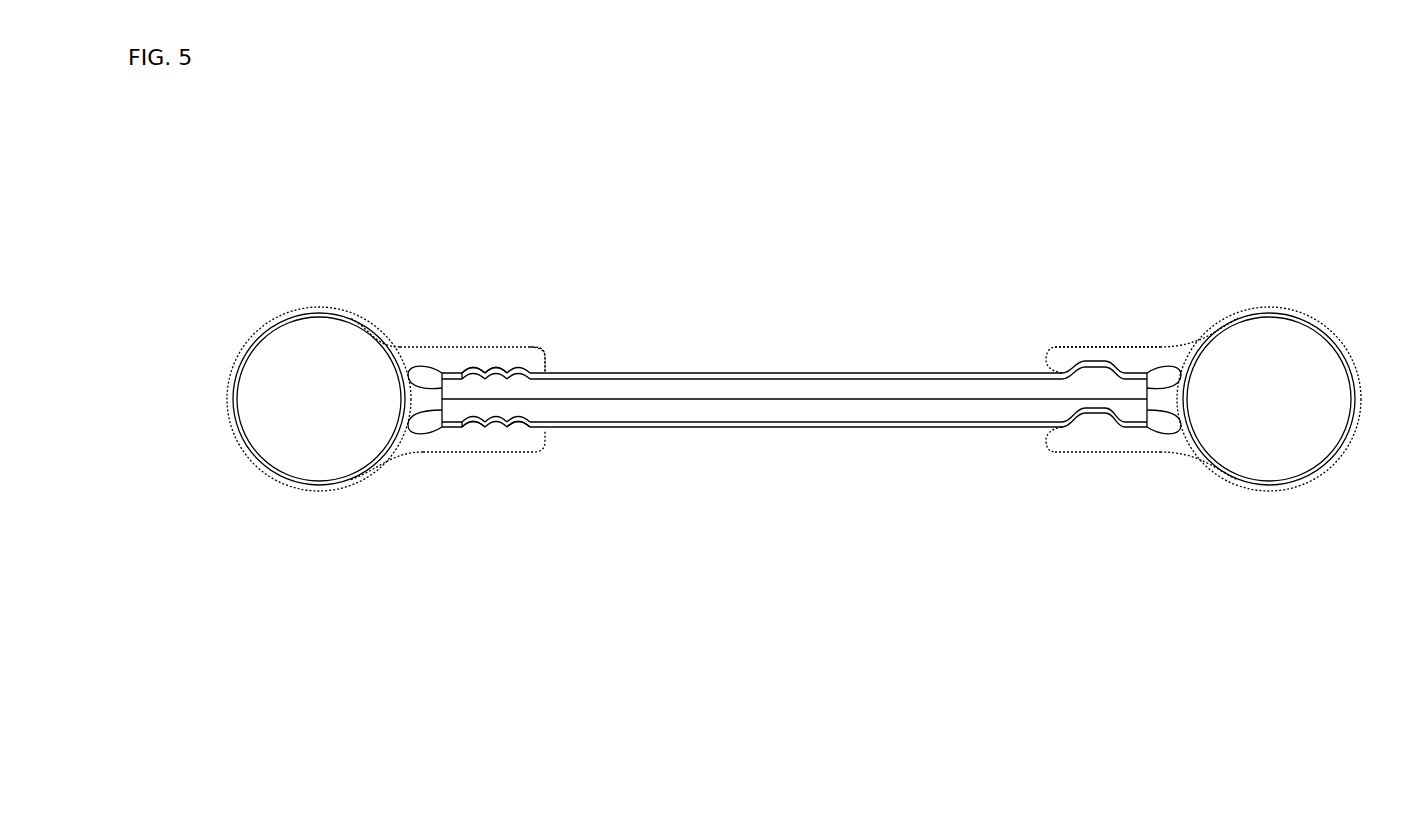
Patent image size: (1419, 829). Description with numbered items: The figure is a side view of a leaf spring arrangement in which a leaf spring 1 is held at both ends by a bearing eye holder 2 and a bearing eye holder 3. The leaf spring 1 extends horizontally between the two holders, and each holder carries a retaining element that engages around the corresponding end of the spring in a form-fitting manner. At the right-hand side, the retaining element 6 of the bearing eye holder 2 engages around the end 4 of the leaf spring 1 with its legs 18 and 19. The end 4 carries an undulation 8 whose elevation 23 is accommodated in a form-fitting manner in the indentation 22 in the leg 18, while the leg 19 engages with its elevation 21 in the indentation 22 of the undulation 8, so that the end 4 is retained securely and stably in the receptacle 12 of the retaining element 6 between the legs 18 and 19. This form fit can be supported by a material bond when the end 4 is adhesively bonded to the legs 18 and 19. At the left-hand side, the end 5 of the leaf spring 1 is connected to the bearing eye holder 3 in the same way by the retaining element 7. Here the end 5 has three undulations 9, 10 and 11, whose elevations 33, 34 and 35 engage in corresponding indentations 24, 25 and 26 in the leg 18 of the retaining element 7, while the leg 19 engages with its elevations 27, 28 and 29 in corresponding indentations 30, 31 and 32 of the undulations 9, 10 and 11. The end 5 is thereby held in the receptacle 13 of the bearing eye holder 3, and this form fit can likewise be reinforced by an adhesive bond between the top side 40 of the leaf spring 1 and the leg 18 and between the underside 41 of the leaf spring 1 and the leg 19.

The leaf spring 1 is at (797, 200).
The bearing eye holder 2 is at (1332, 225).
The bearing eye holder 3 is at (215, 220).
The end 4 is at (1058, 263).
The end 5 is at (552, 247).
The retaining element 6 is at (1155, 198).
The retaining element 7 is at (450, 207).
The undulation 8 is at (1076, 352).
The undulation 9 is at (465, 368).
The undulation 10 is at (494, 370).
The undulation 11 is at (545, 424).
The receptacle 12 is at (1155, 385).
The receptacle 13 is at (427, 383).
The leg 18 is at (545, 363).
The leg 19 is at (530, 441).
The elevation 21 is at (1090, 430).
The indentation 22 is at (1097, 358).
The elevation 23 is at (1113, 367).
The indentation 24 is at (451, 371).
The indentation 25 is at (487, 368).
The indentation 26 is at (513, 370).
The elevation 27 is at (460, 429).
The elevation 28 is at (488, 428).
The elevation 29 is at (507, 430).
The indentation 30 is at (447, 426).
The indentation 31 is at (473, 428).
The indentation 32 is at (513, 430).
The elevation 33 is at (450, 397).
The elevation 34 is at (713, 352).
The elevation 35 is at (450, 397).
The top side 40 is at (912, 373).
The underside 41 is at (912, 427).